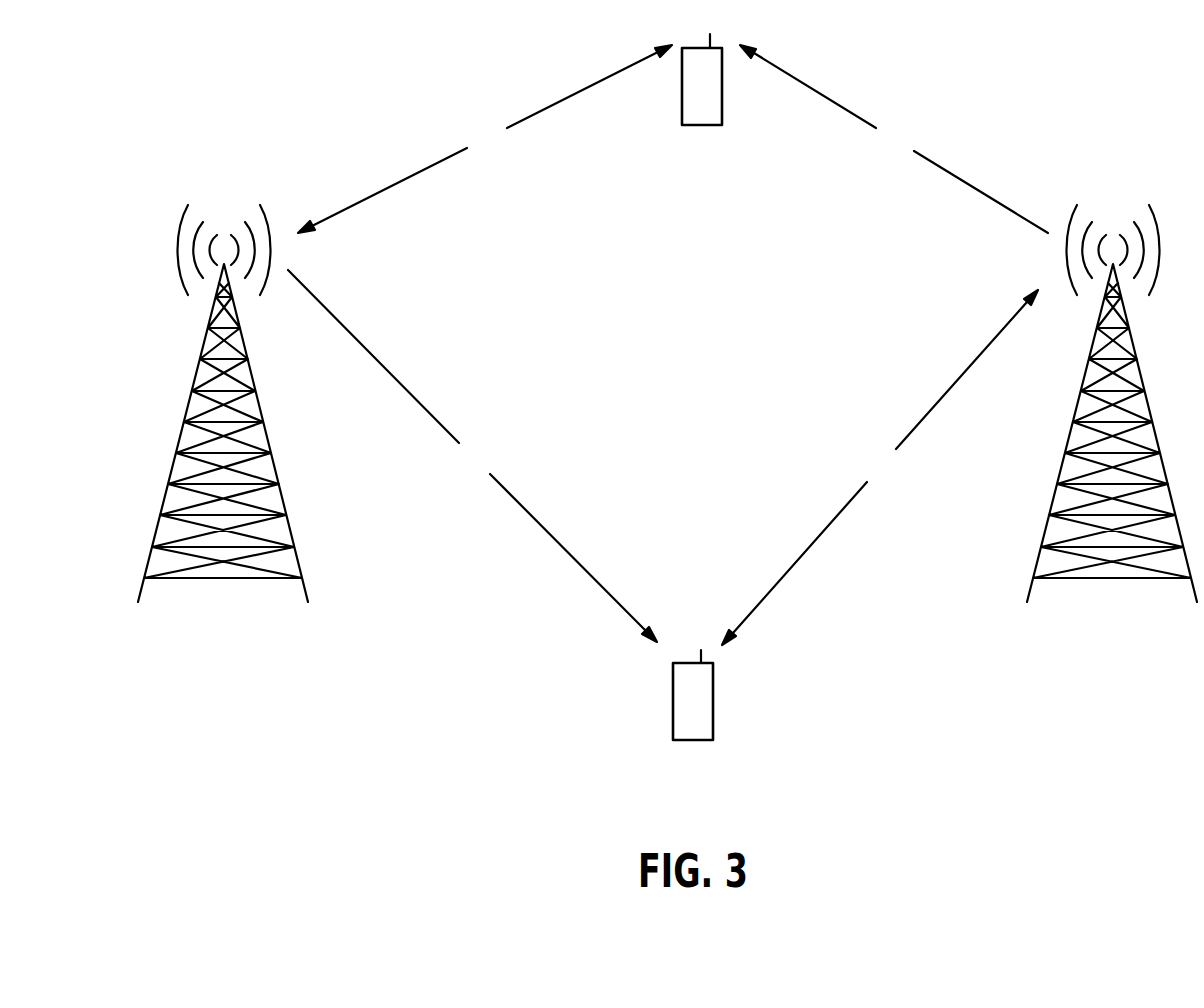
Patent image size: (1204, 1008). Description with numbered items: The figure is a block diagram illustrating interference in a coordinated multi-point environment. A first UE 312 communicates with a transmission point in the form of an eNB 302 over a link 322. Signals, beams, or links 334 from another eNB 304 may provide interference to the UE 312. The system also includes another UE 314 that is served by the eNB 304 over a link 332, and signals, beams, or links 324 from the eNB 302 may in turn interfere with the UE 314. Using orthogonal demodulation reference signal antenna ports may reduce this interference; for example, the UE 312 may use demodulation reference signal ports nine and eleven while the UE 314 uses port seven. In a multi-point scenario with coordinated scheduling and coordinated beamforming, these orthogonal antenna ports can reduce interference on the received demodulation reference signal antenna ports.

The eNB 302 is at (299, 589).
The eNB 304 is at (1163, 584).
The first UE 312 is at (717, 127).
The UE 314 is at (703, 752).
The link 322 is at (485, 139).
The signals, beams, links 324 is at (472, 456).
The link 332 is at (880, 467).
The signals, beams, links 334 is at (894, 139).